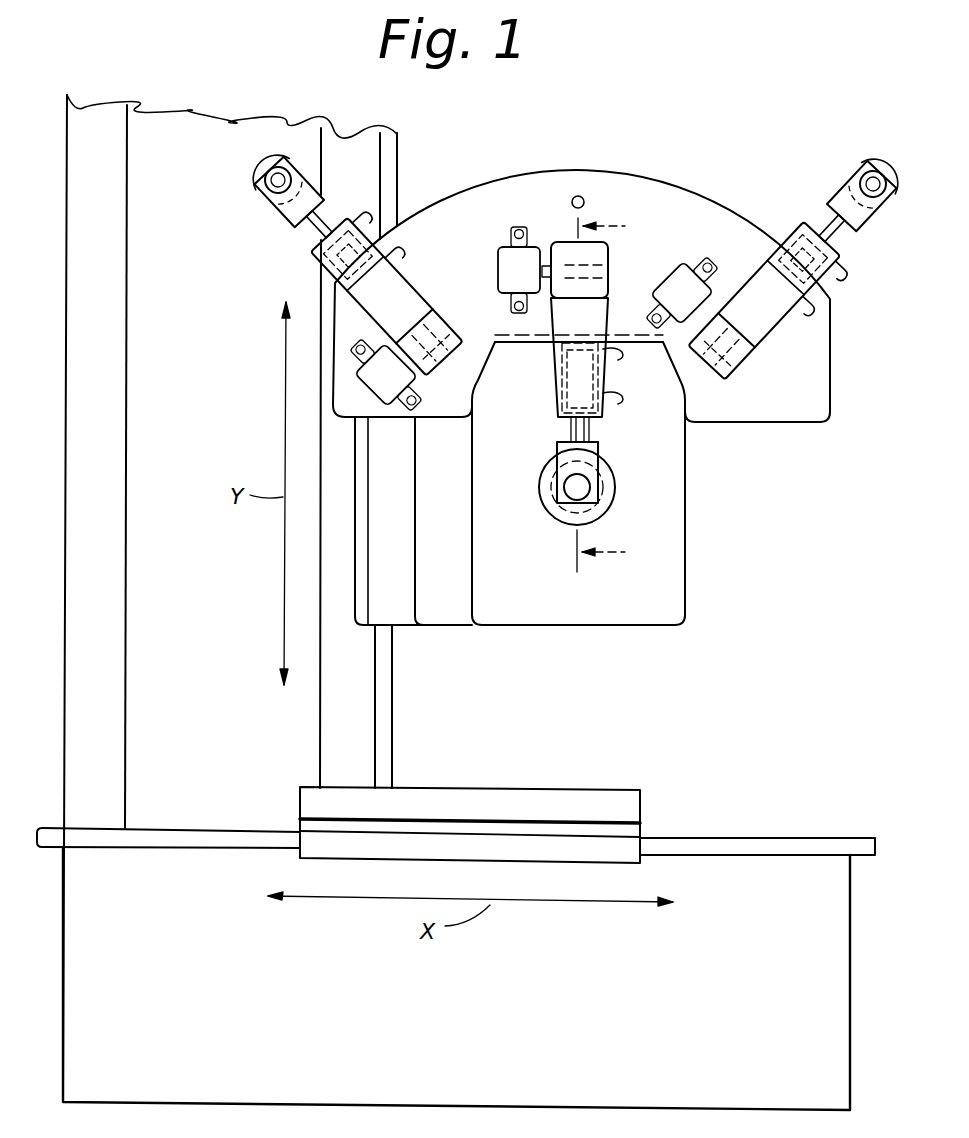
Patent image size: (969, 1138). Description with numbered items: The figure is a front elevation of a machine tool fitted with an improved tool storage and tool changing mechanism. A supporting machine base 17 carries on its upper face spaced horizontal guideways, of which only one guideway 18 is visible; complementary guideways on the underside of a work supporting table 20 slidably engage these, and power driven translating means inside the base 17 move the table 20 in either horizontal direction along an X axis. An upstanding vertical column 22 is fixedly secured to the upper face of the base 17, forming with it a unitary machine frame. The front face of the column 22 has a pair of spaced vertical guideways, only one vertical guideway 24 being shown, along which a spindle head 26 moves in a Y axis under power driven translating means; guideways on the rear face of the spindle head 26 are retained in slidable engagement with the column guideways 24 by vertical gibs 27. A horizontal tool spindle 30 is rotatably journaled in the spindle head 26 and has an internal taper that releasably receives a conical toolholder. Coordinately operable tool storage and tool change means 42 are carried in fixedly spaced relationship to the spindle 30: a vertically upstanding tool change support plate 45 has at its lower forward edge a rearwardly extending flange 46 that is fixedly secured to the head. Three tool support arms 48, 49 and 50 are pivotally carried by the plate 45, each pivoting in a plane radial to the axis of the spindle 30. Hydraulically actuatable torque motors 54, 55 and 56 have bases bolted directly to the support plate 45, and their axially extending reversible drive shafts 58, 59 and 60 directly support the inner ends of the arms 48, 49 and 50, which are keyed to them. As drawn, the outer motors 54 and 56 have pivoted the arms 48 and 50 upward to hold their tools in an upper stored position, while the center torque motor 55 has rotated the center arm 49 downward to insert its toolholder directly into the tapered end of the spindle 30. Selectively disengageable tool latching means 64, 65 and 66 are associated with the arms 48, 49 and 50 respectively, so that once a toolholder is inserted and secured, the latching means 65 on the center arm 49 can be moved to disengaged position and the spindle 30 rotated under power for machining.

The machine base 17 is at (576, 1019).
The horizontal guideway 18 is at (700, 847).
The work supporting table 20 is at (560, 793).
The vertical column 22 is at (181, 716).
The vertical guideway 24 is at (383, 713).
The spindle head 26 is at (525, 607).
The vertical gibs 27 is at (362, 615).
The tool spindle 30 is at (565, 508).
The tool storage and tool change means 42 is at (648, 172).
The tool change support plate 45 is at (694, 221).
The rearwardly extending flange 46 is at (538, 342).
The tool support arm 48 is at (388, 228).
The center tool support arm 49 is at (593, 329).
The tool support arm 50 is at (800, 266).
The hydraulically actuatable torque motor 54 is at (398, 403).
The center torque motor 55 is at (512, 252).
The hydraulically actuatable torque motor 56 is at (677, 272).
The reversible drive shaft 58 is at (440, 312).
The reversible drive shaft 59 is at (603, 270).
The reversible drive shaft 60 is at (742, 362).
The tool latching means 64 is at (306, 172).
The tool latching means 65 is at (552, 447).
The tool latching means 66 is at (836, 191).